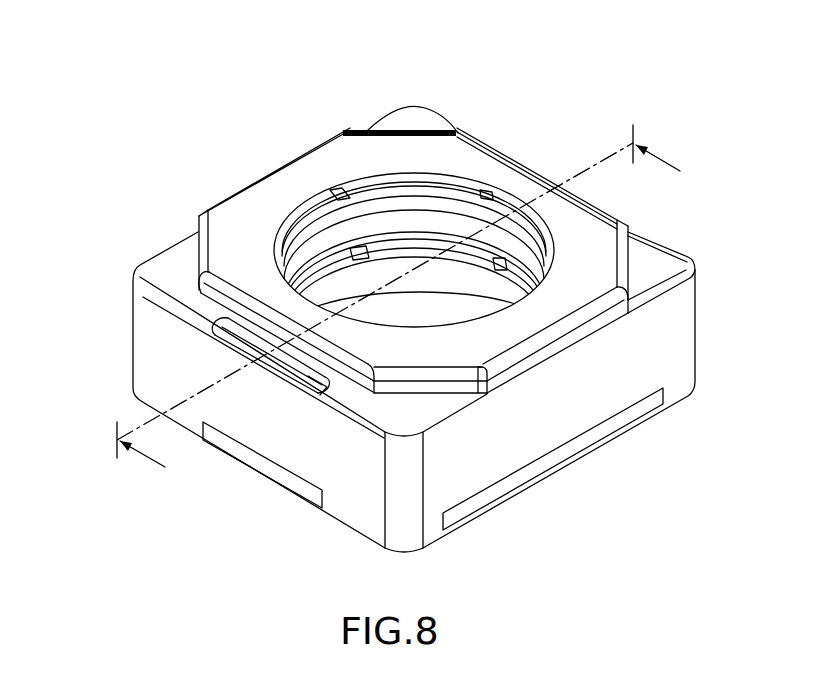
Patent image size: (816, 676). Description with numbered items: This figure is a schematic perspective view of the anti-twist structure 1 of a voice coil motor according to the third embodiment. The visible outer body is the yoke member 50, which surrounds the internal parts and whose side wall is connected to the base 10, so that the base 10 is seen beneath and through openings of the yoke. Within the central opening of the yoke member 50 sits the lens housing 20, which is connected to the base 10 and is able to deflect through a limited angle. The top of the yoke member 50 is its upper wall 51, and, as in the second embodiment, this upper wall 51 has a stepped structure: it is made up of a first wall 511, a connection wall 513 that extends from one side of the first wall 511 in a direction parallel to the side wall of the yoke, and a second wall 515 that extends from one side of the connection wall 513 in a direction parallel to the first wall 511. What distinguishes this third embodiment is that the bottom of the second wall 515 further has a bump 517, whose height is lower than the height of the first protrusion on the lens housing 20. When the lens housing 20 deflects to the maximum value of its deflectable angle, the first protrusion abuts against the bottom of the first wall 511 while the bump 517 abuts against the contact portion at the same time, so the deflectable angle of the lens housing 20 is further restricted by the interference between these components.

The anti-twist structure of voice coil motor 1 is at (100, 108).
The base 10 is at (466, 275).
The lens housing 20 is at (372, 210).
The yoke member 50 is at (676, 380).
The upper wall 51 is at (322, 70).
The first wall 511 is at (280, 292).
The connection wall 513 is at (200, 291).
The second wall 515 is at (218, 316).
The bump 517 is at (310, 385).